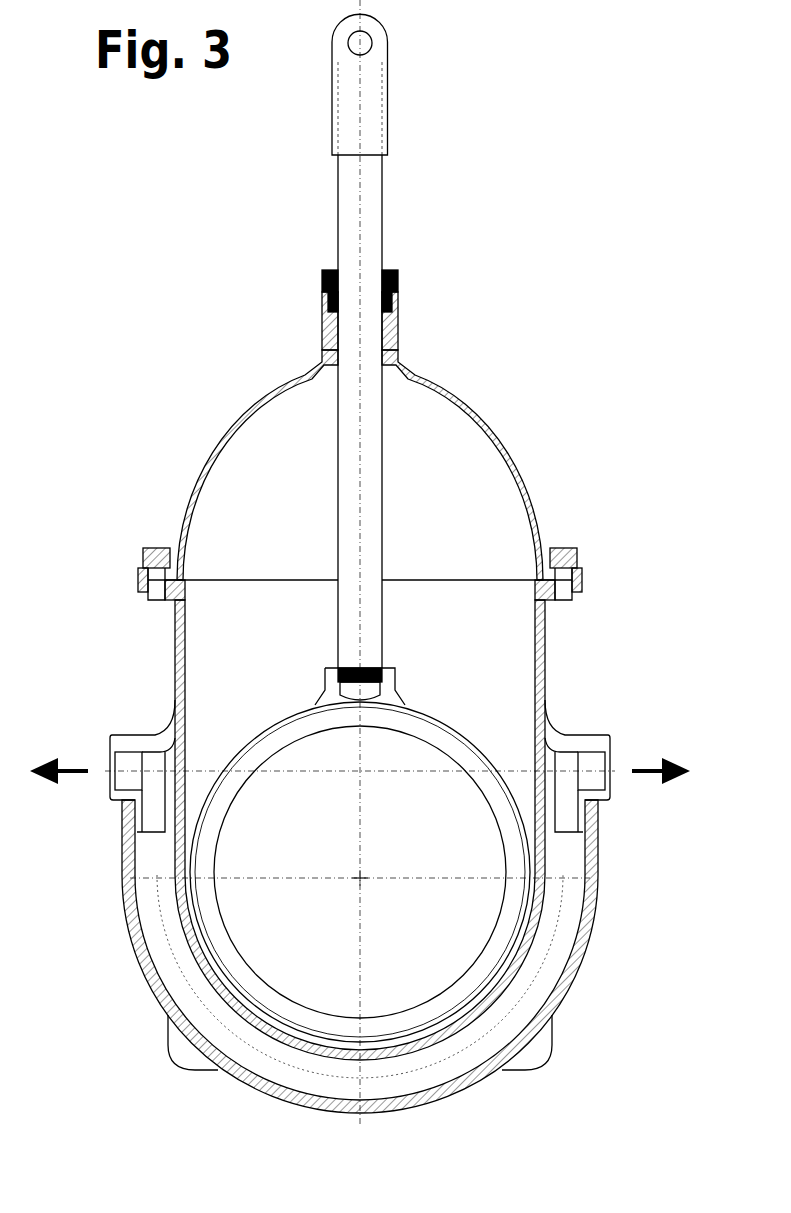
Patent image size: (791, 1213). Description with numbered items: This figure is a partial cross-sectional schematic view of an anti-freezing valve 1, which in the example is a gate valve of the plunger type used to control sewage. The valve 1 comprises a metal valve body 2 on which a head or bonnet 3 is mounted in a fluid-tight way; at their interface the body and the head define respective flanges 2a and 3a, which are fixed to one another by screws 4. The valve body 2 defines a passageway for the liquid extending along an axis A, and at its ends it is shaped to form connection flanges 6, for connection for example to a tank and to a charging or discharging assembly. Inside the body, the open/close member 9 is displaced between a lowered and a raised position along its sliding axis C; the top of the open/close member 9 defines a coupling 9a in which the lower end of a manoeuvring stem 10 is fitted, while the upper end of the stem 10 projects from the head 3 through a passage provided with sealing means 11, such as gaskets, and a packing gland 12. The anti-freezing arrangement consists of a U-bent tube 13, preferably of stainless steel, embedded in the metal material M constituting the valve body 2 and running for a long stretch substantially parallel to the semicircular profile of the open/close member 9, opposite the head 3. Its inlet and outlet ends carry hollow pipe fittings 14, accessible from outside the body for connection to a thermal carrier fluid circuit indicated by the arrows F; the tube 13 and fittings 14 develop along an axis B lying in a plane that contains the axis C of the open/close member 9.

The anti-freezing valve 1 is at (578, 360).
The valve body 2 is at (172, 655).
The body flange 2a is at (143, 587).
The head or bonnet 3 is at (225, 415).
The head flange 3a is at (582, 579).
The screws 4 is at (153, 548).
The connection flange 6 is at (546, 1048).
The open/close member 9 is at (434, 706).
The coupling 9a is at (390, 690).
The manoeuvring stem 10 is at (336, 195).
The sealing means 11 is at (330, 316).
The packing gland 12 is at (397, 268).
The tube 13 is at (448, 1092).
The pipe fittings 14 is at (105, 741).
The passageway axis A is at (358, 880).
The hollow member axis B is at (560, 923).
The open/close member axis C is at (358, 828).
The metal material M is at (560, 735).